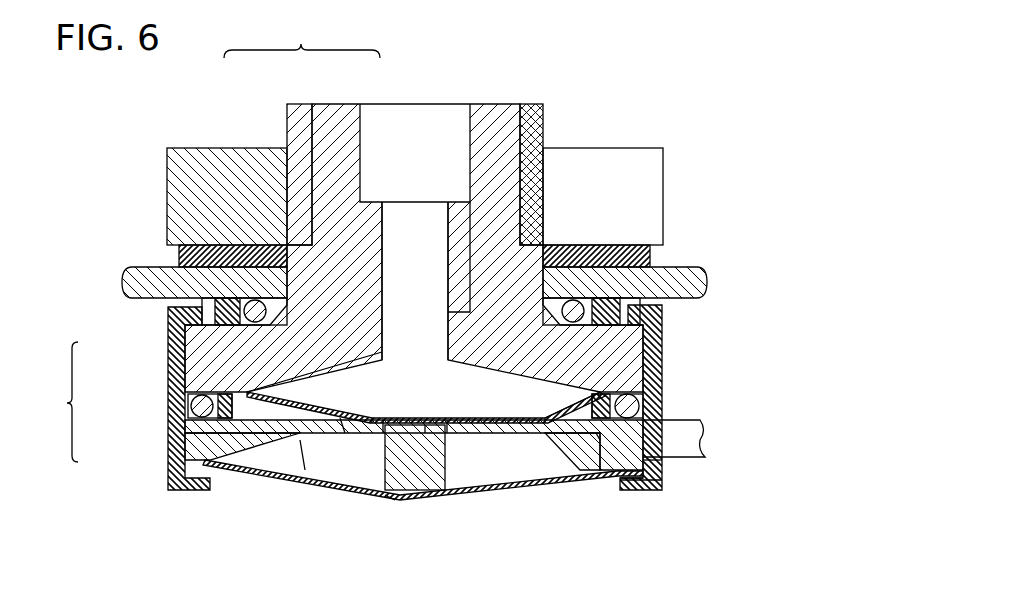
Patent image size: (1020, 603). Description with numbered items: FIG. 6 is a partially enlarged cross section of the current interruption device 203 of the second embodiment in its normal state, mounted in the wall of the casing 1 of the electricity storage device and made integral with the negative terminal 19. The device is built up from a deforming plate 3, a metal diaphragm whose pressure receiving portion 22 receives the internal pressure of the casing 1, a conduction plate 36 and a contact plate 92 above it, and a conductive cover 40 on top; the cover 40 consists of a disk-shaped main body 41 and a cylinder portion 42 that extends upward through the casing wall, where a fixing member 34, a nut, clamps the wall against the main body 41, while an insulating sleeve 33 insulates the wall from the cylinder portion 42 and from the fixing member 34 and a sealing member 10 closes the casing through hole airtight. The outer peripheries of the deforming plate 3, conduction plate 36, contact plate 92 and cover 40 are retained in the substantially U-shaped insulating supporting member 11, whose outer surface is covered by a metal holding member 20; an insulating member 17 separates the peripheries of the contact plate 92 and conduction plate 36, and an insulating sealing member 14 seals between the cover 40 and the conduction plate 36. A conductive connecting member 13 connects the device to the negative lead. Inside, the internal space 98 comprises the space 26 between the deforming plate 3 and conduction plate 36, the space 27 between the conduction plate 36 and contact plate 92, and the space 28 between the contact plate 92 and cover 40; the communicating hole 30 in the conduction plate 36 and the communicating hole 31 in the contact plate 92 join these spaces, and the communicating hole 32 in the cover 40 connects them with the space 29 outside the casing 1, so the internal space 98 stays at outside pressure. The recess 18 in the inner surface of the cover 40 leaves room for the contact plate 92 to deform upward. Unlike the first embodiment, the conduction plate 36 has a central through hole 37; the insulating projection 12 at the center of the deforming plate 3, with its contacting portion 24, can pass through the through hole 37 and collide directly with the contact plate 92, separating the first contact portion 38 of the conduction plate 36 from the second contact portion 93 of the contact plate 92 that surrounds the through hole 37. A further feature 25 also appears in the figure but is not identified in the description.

The casing 1 is at (690, 295).
The deforming plate 3 is at (270, 487).
The sealing member 10 is at (655, 322).
The insulating supporting member 11 is at (645, 488).
The projection 12 is at (452, 468).
The conductive connecting member 13 is at (655, 478).
The sealing member 14 is at (690, 437).
The insulating member 17 is at (630, 410).
The recess 18 is at (467, 362).
The negative terminal 19 is at (665, 108).
The holding member 20 is at (630, 488).
The pressure receiving portion 22 is at (390, 497).
The contacting portion 24 is at (425, 500).
The lower chamber 25 is at (138, 501).
The space 26 is at (247, 453).
The space 27 is at (250, 413).
The space 28 is at (395, 355).
The space outside the casing 29 is at (139, 136).
The communicating hole 30 is at (575, 470).
The communicating hole 31 is at (545, 470).
The communicating hole 32 is at (383, 247).
The insulating sleeve 33 is at (182, 254).
The fixing member 34 is at (560, 152).
The conduction plate 36 is at (600, 475).
The through hole 37 is at (370, 480).
The first contact portion 38 is at (305, 480).
The cover 40 is at (302, 39).
The main body 41 is at (212, 243).
The cylinder portion 42 is at (322, 112).
The contact plate 92 is at (597, 392).
The second contact portion 93 is at (345, 470).
The internal space 98 is at (56, 402).
The current interruption device 203 is at (713, 352).